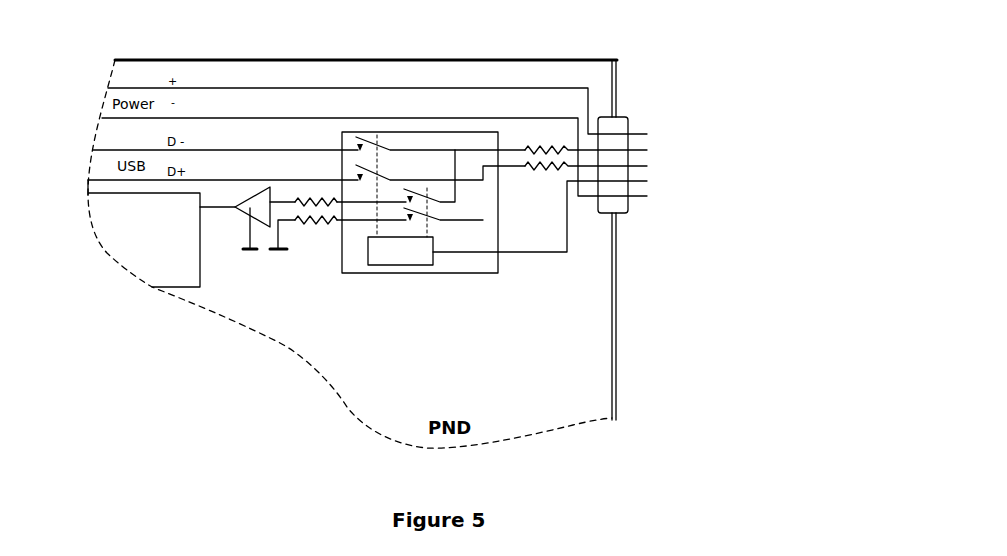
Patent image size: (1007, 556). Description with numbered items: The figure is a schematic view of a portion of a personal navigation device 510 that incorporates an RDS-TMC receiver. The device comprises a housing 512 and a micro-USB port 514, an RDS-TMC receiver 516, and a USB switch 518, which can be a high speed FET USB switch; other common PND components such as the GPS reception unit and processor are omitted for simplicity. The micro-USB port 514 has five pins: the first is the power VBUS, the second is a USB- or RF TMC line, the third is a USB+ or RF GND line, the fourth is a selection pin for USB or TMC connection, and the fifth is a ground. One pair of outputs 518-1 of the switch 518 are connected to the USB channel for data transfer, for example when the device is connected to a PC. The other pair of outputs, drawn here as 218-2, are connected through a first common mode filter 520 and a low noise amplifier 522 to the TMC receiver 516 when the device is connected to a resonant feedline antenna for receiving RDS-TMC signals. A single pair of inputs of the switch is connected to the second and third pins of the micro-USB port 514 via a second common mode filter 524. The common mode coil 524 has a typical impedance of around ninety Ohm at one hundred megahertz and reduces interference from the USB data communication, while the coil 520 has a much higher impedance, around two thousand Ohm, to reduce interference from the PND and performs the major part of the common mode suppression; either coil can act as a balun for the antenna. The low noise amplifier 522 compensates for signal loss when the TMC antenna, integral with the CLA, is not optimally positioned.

The portion of a personal navigation device 510 is at (401, 42).
The housing 512 is at (616, 294).
The micro-USB port 514 is at (622, 117).
The RDS-TMC receiver 516 is at (145, 251).
The USB switch 518 is at (490, 265).
The pair of outputs 518-1 is at (290, 180).
The RF signal lines 218-2 is at (357, 201).
The first common mode filter 520 is at (303, 253).
The low noise amplifier 522 is at (261, 208).
The second common mode filter 524 is at (550, 150).